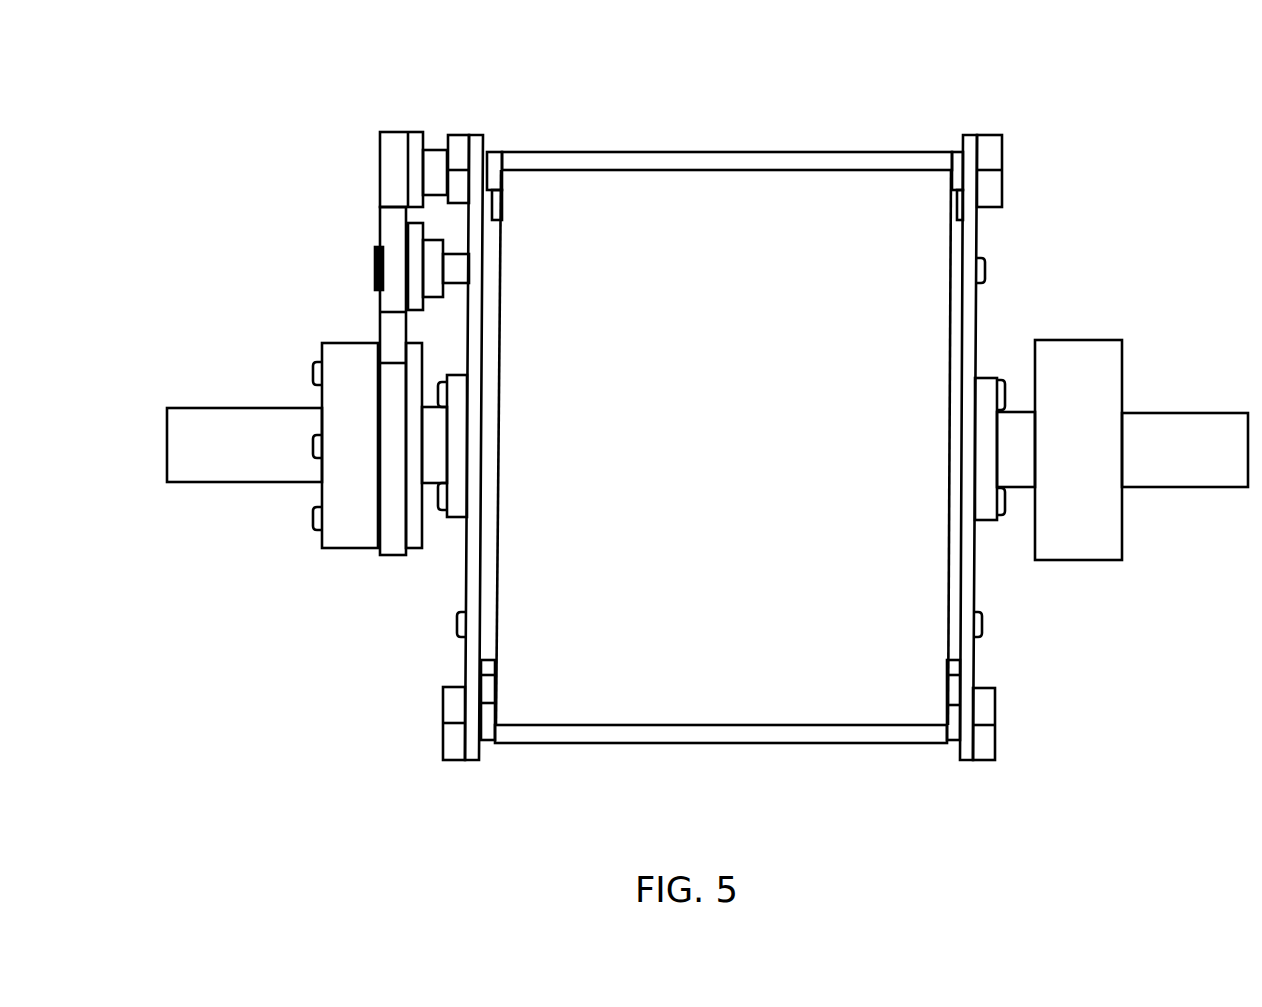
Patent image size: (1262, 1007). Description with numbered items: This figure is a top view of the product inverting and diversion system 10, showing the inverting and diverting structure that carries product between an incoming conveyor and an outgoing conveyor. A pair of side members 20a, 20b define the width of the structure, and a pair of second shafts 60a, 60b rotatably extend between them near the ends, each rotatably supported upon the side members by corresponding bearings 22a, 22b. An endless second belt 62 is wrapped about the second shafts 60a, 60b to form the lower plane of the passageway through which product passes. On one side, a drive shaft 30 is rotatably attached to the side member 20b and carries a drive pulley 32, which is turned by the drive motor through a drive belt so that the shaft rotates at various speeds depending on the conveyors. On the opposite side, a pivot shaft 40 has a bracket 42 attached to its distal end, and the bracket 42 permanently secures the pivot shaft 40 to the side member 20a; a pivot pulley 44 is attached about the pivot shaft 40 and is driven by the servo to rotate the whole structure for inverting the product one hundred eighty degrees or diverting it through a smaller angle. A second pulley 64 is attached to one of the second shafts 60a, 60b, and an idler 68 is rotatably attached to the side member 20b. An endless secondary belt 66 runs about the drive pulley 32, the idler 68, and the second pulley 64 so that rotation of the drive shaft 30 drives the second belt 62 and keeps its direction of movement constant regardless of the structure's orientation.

The product inverting and diversion system 10 is at (727, 387).
The side member 20a is at (1048, 447).
The side member 20b is at (390, 447).
The bearing 22a is at (1065, 437).
The bearing 22b is at (410, 397).
The drive shaft 30 is at (244, 399).
The drive pulley 32 is at (316, 409).
The pivot shaft 40 is at (1191, 412).
The bracket 42 is at (1031, 387).
The pivot pulley 44 is at (1121, 391).
The second shaft 60a is at (720, 756).
The second shaft 60b is at (725, 152).
The second belt 62 is at (723, 503).
The second pulley 64 is at (368, 127).
The secondary belt 66 is at (339, 403).
The idler 68 is at (323, 227).